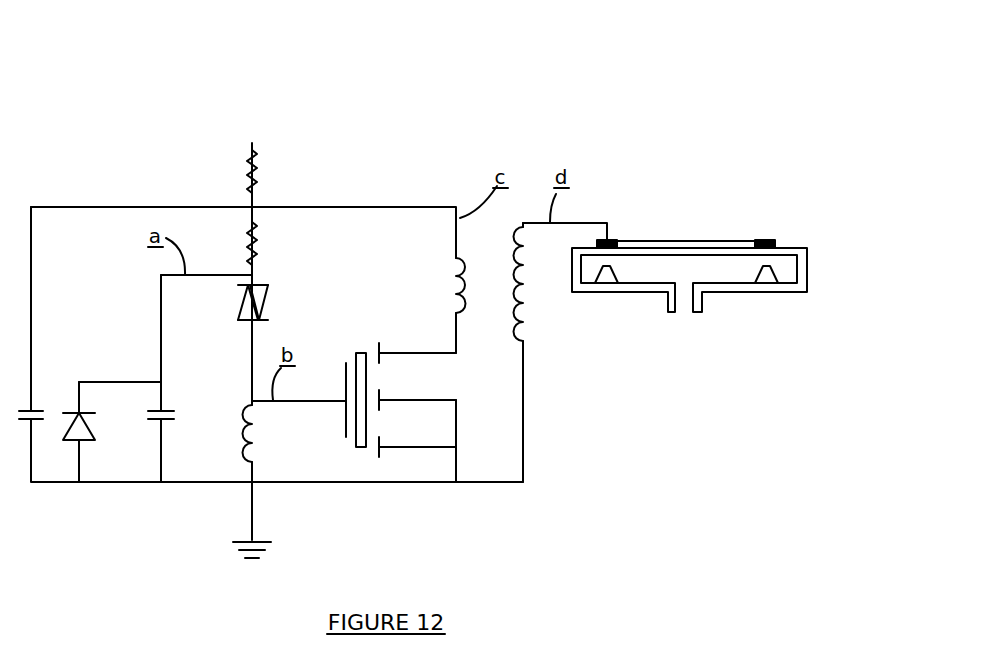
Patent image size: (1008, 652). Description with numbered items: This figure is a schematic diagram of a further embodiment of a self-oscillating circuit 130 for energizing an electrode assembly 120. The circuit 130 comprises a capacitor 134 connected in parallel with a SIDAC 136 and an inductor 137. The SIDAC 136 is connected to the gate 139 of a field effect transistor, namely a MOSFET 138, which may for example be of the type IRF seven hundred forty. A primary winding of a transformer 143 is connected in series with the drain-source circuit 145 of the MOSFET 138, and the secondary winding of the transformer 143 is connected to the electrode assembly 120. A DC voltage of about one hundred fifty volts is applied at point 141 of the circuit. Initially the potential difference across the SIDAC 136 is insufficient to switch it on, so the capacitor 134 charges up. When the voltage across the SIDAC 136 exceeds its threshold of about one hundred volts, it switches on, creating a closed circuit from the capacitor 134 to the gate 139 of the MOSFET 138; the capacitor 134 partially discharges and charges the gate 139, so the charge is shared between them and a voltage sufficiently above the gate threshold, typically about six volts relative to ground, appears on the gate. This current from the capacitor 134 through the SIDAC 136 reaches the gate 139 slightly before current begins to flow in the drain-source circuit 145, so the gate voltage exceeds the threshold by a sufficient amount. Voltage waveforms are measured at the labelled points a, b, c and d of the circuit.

The electrode assembly 120 is at (801, 194).
The self-oscillating circuit 130 is at (536, 116).
The capacitor 134 is at (163, 408).
The SIDAC 136 is at (268, 303).
The inductor 137 is at (237, 423).
The MOSFET 138 is at (496, 407).
The gate 139 is at (343, 403).
The point 141 is at (252, 143).
The transformer 143 is at (489, 340).
The drain-source circuit 145 is at (455, 331).